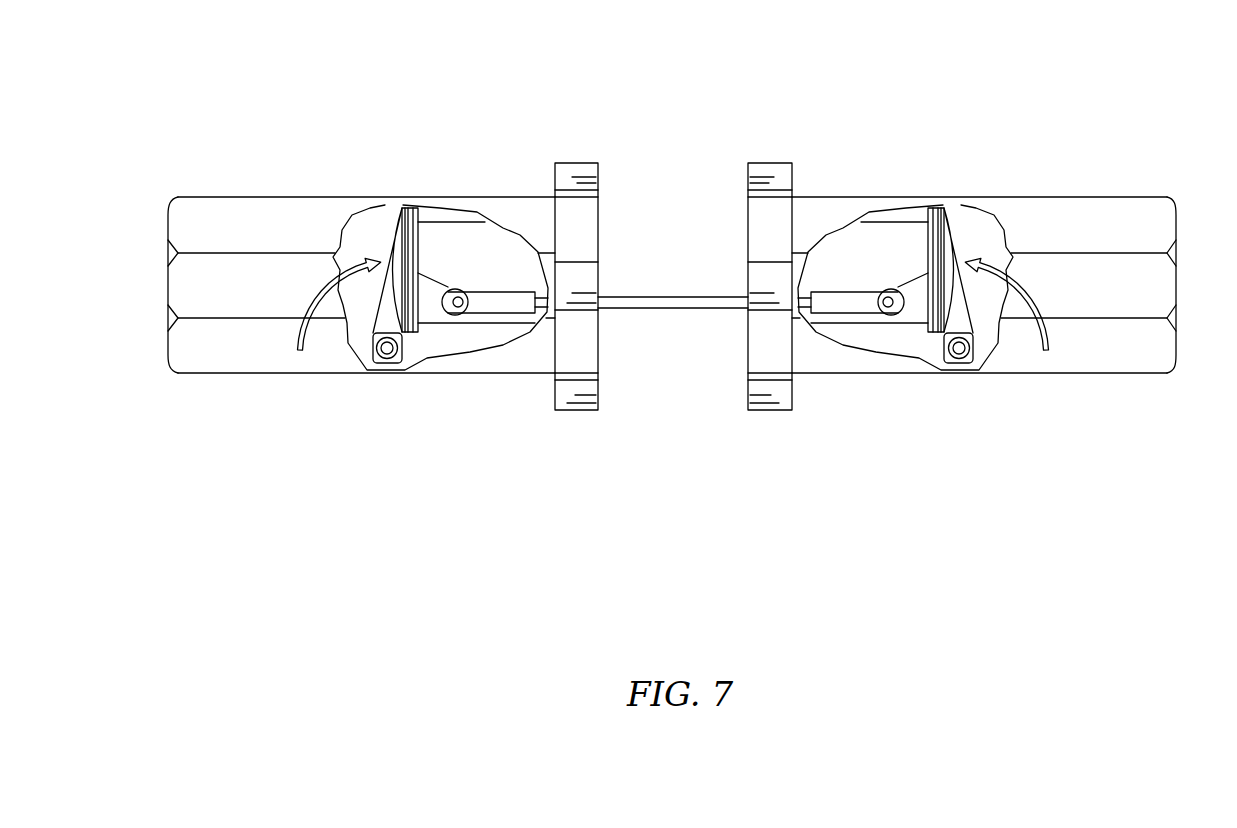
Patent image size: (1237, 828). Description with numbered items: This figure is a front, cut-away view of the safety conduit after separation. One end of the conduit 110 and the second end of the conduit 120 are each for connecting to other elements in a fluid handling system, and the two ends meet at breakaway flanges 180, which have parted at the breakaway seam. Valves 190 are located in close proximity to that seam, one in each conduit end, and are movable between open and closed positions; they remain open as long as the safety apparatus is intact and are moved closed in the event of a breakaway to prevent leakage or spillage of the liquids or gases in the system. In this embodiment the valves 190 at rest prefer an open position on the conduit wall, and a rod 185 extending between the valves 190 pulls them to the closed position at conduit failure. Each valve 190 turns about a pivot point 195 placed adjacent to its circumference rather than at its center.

The conduit 110 is at (1133, 240).
The second end of conduit 120 is at (232, 212).
The breakaway flanges 180 is at (580, 170).
The rod 185 is at (638, 309).
The valves 190 is at (943, 321).
The pivot point 195 is at (458, 314).